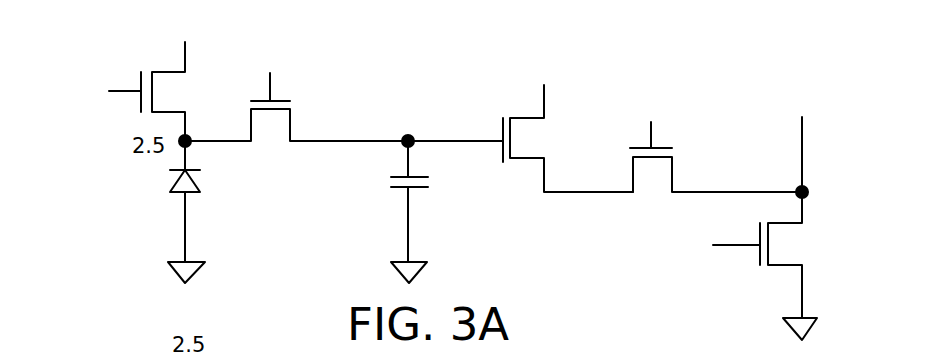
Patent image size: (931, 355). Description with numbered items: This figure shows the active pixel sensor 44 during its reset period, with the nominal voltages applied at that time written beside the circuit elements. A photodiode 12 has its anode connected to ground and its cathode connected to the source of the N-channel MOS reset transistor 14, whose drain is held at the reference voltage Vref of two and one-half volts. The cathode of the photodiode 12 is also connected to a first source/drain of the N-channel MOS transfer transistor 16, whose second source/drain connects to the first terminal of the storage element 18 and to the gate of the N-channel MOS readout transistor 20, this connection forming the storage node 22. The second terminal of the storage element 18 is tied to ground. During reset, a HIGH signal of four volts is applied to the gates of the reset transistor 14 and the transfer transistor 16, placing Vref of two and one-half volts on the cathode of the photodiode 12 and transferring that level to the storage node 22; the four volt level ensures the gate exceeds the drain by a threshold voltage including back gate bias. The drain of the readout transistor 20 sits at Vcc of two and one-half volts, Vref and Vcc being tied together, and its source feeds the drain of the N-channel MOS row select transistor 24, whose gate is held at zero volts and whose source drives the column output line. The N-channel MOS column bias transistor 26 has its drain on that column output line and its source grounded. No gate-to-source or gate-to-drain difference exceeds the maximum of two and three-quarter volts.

The photodiode 12 is at (168, 197).
The N-channel MOS reset transistor 14 is at (177, 97).
The N-channel MOS transfer transistor 16 is at (268, 137).
The storage element 18 is at (385, 185).
The N-channel MOS readout transistor 20 is at (543, 145).
The storage node 22 is at (418, 145).
The N-channel MOS row select transistor 24 is at (655, 188).
The N-channel MOS column bias transistor 26 is at (792, 252).
The active pixel sensor 44 is at (710, 66).